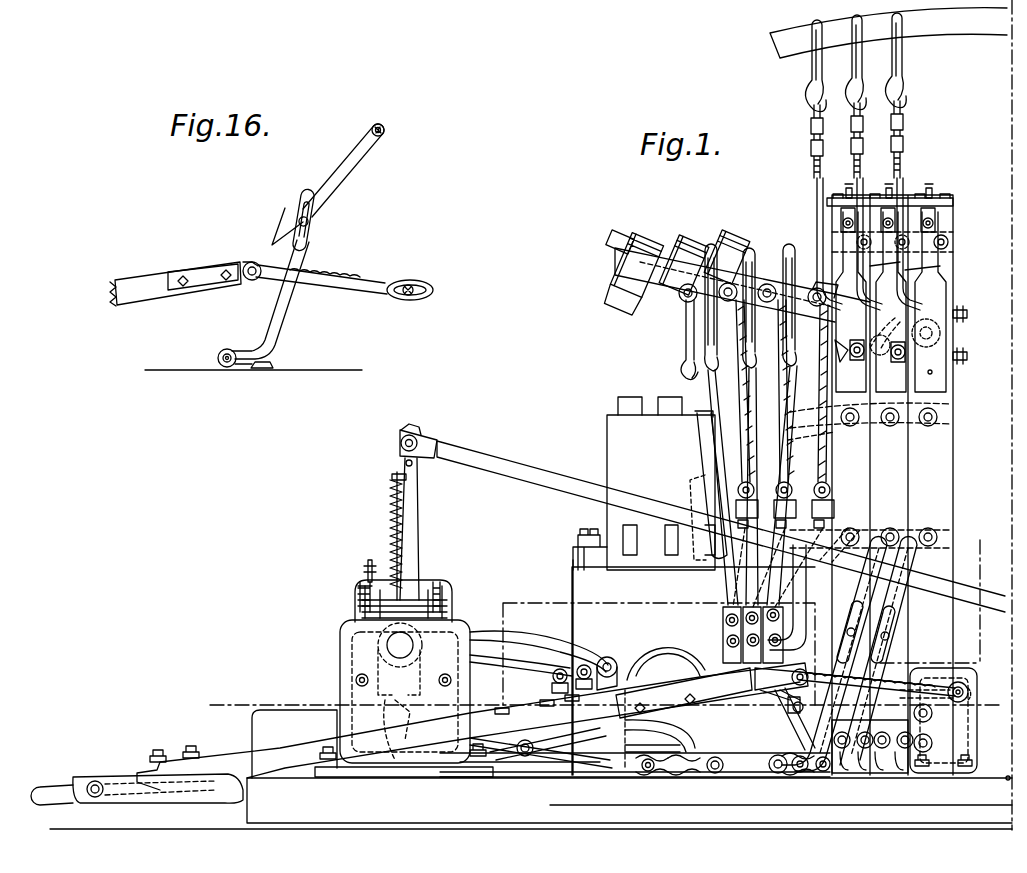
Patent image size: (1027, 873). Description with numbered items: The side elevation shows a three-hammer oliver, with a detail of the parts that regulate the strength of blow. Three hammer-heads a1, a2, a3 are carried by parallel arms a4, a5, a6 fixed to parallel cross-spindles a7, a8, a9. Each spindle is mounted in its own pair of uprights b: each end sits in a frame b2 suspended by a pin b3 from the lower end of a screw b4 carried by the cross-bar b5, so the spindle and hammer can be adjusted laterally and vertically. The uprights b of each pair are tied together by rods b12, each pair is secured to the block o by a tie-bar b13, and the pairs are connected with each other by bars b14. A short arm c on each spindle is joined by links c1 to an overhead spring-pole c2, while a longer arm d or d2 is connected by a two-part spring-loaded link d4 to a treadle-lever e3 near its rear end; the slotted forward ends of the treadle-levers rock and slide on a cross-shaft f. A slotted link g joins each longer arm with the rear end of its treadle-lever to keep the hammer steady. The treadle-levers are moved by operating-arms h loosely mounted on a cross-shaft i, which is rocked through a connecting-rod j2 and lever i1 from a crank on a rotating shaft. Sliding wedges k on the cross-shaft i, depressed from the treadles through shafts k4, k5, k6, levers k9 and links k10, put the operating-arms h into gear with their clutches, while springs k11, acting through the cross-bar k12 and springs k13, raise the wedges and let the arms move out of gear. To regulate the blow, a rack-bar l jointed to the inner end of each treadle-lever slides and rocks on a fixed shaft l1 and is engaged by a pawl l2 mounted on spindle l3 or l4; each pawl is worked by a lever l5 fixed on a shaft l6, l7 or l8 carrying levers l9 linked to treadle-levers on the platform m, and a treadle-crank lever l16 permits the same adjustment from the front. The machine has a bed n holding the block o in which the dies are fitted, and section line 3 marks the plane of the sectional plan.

In FIG. 1, the section line 3 is at (598, 706).
In FIG. 1, the hammer-head a1 is at (648, 235).
In FIG. 1, the hammer-head a2 is at (692, 235).
In FIG. 1, the hammer-head a3 is at (735, 233).
In FIG. 1, the parallel arm a4 is at (605, 248).
In FIG. 1, the parallel arm a5 is at (735, 270).
In FIG. 1, the parallel arm a6 is at (812, 288).
In FIG. 1, the cross-spindle a7 is at (840, 362).
In FIG. 1, the cross-spindle a8 is at (903, 330).
In FIG. 1, the cross-spindle a9 is at (942, 333).
In FIG. 1, the upright b is at (885, 476).
In FIG. 1, the frame b2 is at (921, 341).
In FIG. 1, the pin b3 is at (842, 223).
In FIG. 1, the screw b4 is at (885, 183).
In FIG. 1, the cross-bar b5 is at (828, 202).
In FIG. 1, the tie rod b12 is at (958, 410).
In FIG. 1, the tie-bar b13 is at (810, 448).
In FIG. 1, the connecting bar b14 is at (930, 270).
In FIG. 1, the short arm c is at (826, 368).
In FIG. 1, the link c1 is at (810, 160).
In FIG. 1, the spring-pole c2 is at (790, 36).
In FIG. 1, the longer arm d is at (695, 340).
In FIG. 1, the longer arm d2 is at (780, 262).
In FIG. 1, the link d4 is at (712, 465).
In FIG. 16, the treadle-lever e3 is at (152, 284).
In FIG. 1, the treadle-lever e3 is at (472, 726).
In FIG. 1, the cross-shaft f is at (95, 781).
In FIG. 1, the steadying link g is at (769, 453).
In FIG. 1, the operating-arm h is at (525, 678).
In FIG. 1, the cross-shaft i is at (400, 645).
In FIG. 1, the lever i1 is at (398, 462).
In FIG. 1, the connecting-rod j2 is at (545, 470).
In FIG. 1, the sliding wedge k is at (406, 671).
In FIG. 1, the shaft k4 is at (655, 772).
In FIG. 1, the shaft k5 is at (690, 774).
In FIG. 1, the shaft k6 is at (716, 774).
In FIG. 1, the lever k9 is at (575, 762).
In FIG. 1, the link k10 is at (410, 700).
In FIG. 1, the spring k11 is at (408, 528).
In FIG. 1, the cross-bar k12 is at (418, 600).
In FIG. 1, the spring k13 is at (357, 596).
In FIG. 16, the rack-bar l is at (346, 283).
In FIG. 1, the rack-bar l is at (878, 690).
In FIG. 16, the fixed horizontal shaft l1 is at (409, 287).
In FIG. 1, the fixed horizontal shaft l1 is at (968, 688).
In FIG. 16, the pawl l2 is at (338, 183).
In FIG. 1, the pawl l2 is at (893, 606).
In FIG. 16, the fixed horizontal spindle l3 is at (384, 129).
In FIG. 1, the fixed horizontal spindle l3 is at (878, 536).
In FIG. 1, the fixed horizontal spindle l4 is at (896, 536).
In FIG. 16, the pawl-operating lever l5 is at (270, 325).
In FIG. 1, the pawl-operating lever l5 is at (838, 695).
In FIG. 1, the horizontal shaft l6 is at (824, 772).
In FIG. 1, the horizontal shaft l7 is at (799, 773).
In FIG. 16, the horizontal shaft l8 is at (222, 366).
In FIG. 1, the horizontal shaft l8 is at (775, 774).
In FIG. 1, the lever l9 is at (787, 719).
In FIG. 1, the treadle-crank lever l16 is at (666, 660).
In FIG. 1, the platform m is at (372, 742).
In FIG. 1, the bed n is at (659, 667).
In FIG. 1, the block o is at (644, 483).